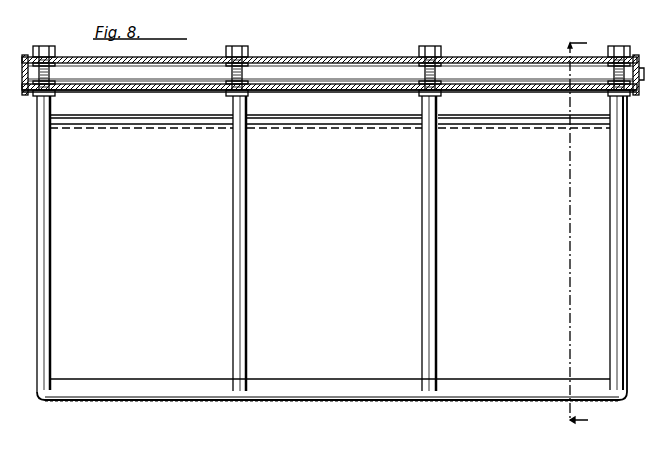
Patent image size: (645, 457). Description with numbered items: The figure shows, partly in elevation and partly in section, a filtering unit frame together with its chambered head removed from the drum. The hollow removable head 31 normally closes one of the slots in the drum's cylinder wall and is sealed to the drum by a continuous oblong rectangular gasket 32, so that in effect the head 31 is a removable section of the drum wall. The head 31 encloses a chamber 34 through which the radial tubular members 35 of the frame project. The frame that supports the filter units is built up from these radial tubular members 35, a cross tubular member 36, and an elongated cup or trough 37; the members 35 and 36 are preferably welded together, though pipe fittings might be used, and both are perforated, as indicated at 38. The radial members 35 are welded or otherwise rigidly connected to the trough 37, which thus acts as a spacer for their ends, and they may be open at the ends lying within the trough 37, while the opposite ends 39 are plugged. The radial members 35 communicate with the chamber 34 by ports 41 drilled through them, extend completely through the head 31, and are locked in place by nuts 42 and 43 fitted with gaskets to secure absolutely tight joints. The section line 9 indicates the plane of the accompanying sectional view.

The section line 9 is at (584, 232).
The hollow removable head 31 is at (333, 60).
The continuous oblong rectangular gasket 32 is at (540, 93).
The chamber 34 is at (517, 73).
The radial tubular members 35 is at (243, 265).
The cross tubular member 36 is at (182, 122).
The elongated cup or trough 37 is at (281, 386).
The perforations 38 is at (422, 187).
The plugged ends 39 is at (45, 46).
The ports 41 is at (447, 66).
The nut 42 is at (250, 95).
The nut 43 is at (250, 52).